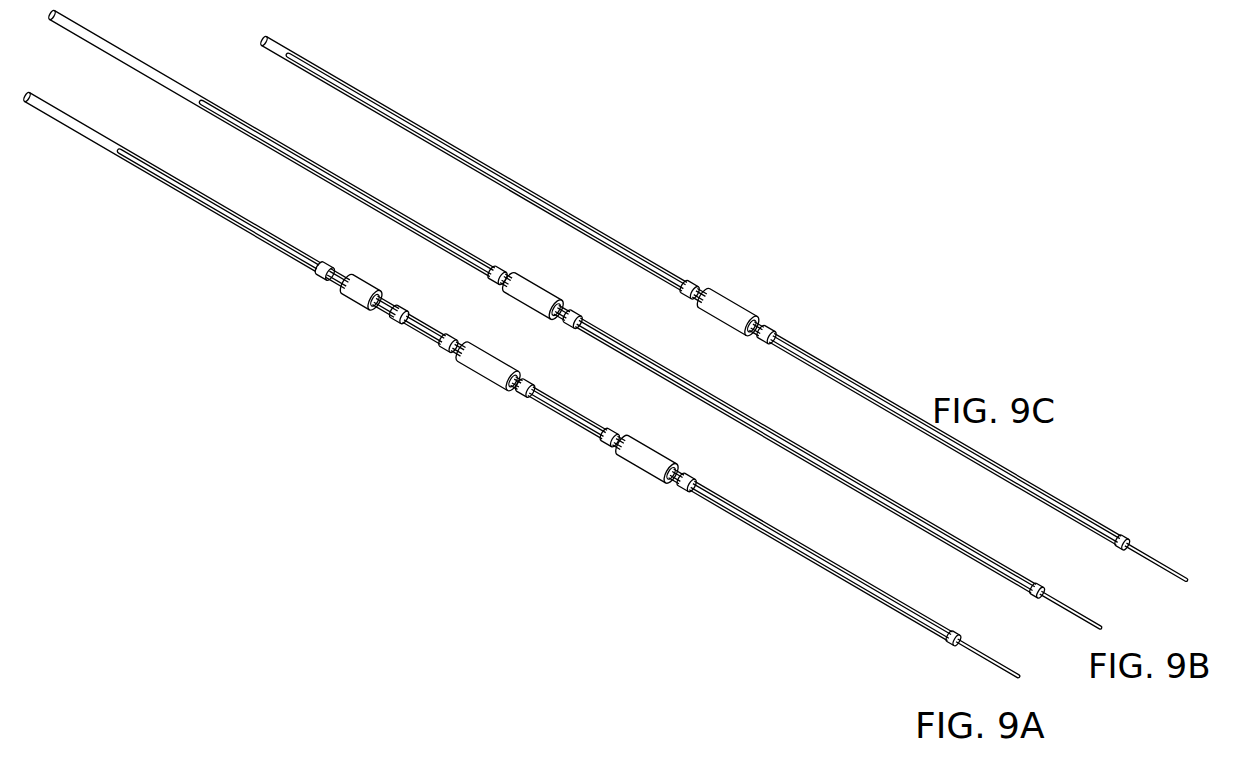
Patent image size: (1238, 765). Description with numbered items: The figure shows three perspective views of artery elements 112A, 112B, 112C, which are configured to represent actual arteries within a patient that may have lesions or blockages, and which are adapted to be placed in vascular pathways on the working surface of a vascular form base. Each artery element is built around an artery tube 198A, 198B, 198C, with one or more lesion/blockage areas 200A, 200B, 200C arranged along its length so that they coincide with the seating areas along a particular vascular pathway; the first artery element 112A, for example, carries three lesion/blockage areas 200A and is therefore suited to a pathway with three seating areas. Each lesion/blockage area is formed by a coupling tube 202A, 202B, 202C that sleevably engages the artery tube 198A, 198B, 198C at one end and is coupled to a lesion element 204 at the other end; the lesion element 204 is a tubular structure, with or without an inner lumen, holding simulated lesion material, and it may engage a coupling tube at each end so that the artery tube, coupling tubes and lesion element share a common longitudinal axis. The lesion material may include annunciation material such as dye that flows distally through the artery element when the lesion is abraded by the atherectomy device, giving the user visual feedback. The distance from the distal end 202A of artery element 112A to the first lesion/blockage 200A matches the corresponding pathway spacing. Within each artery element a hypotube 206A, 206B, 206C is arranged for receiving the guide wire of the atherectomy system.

In FIG. 9A, the artery element 112A is at (558, 427).
In FIG. 9B, the artery element 112B is at (605, 332).
In FIG. 9C, the artery element 112C is at (820, 347).
In FIG. 9A, the artery tube 198A is at (757, 533).
In FIG. 9B, the artery tube 198B is at (843, 485).
In FIG. 9C, the artery tube 198C is at (893, 400).
In FIG. 9A, the lesion/blockage area 200A is at (378, 345).
In FIG. 9B, the lesion/blockage area 200B is at (503, 245).
In FIG. 9C, the lesion/blockage area 200C is at (702, 268).
In FIG. 9A, the coupling tube 202A is at (380, 318).
In FIG. 9B, the coupling tube 202B is at (1025, 592).
In FIG. 9C, the coupling tube 202C is at (1117, 530).
In FIG. 9A, the lesion element 204 is at (365, 288).
In FIG. 9A, the hypotube 206A is at (993, 658).
In FIG. 9B, the hypotube 206B is at (1072, 612).
In FIG. 9C, the hypotube 206C is at (1138, 555).